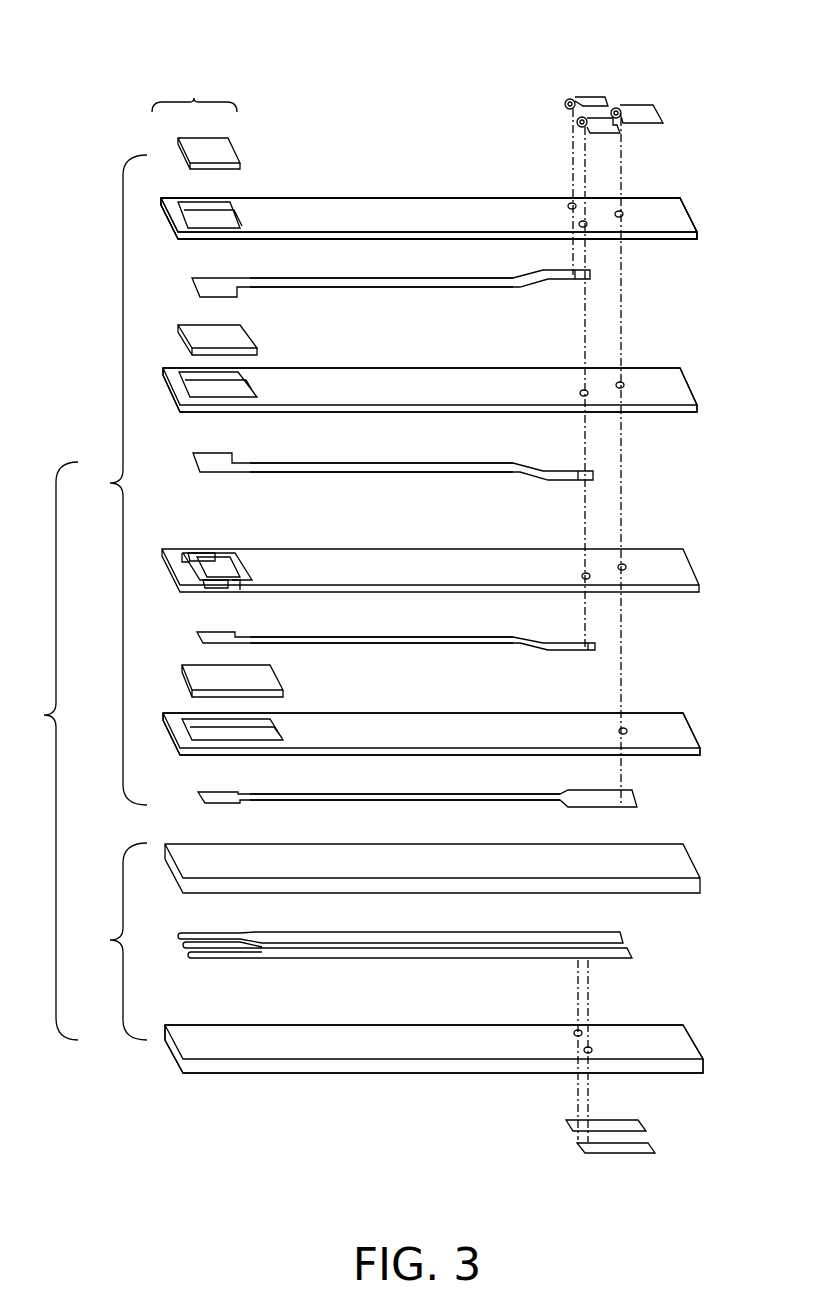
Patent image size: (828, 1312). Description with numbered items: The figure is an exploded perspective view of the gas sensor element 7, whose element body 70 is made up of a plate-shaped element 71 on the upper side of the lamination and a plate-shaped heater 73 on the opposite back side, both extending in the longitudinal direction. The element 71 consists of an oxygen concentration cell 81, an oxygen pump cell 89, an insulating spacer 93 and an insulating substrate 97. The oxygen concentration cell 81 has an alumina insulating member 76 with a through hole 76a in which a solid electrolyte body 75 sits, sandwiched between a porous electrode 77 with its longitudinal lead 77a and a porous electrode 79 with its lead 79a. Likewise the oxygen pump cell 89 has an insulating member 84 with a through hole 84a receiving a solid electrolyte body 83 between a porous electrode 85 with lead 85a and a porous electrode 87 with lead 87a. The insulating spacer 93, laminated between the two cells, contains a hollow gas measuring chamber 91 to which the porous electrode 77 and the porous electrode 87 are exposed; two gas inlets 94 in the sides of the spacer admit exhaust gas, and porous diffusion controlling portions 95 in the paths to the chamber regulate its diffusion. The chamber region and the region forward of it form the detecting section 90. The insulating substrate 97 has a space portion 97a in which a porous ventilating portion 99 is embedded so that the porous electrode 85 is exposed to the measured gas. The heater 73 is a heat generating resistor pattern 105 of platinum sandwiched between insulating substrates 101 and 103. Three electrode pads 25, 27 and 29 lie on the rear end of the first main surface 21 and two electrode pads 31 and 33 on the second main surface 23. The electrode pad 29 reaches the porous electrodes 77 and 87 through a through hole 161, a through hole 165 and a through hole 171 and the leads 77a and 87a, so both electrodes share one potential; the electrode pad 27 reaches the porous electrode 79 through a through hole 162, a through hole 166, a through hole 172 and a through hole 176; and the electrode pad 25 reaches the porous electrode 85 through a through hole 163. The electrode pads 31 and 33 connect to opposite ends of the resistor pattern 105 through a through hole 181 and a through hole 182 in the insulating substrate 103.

The gas sensor element 7 is at (423, 73).
The first main surface 21 is at (350, 205).
The second main surface 23 is at (350, 1076).
The electrode pad 25 is at (592, 95).
The electrode pad 27 is at (645, 106).
The electrode pad 29 is at (602, 132).
The electrode pad 31 is at (620, 1122).
The electrode pad 33 is at (632, 1150).
The element body 70 is at (46, 751).
The element 71 is at (115, 480).
The heater 73 is at (113, 941).
The solid electrolyte body 75 is at (270, 683).
The insulating member 76 is at (355, 720).
The through hole 76a is at (262, 732).
The porous electrode 77 is at (215, 637).
The lead 77a is at (410, 638).
The porous electrode 79 is at (225, 795).
The lead 79a is at (418, 797).
The oxygen concentration cell 81 is at (722, 719).
The solid electrolyte body 83 is at (225, 337).
The insulating member 84 is at (375, 378).
The through hole 84a is at (243, 388).
The porous electrode 85 is at (215, 292).
The lead 85a is at (360, 290).
The porous electrode 87 is at (215, 458).
The lead 87a is at (410, 468).
The oxygen pump cell 89 is at (722, 365).
The detecting section 90 is at (194, 92).
The gas measuring chamber 91 is at (225, 565).
The insulating spacer 93 is at (410, 556).
The gas inlet 94 is at (184, 556).
The diffusion controlling portion 95 is at (208, 556).
The insulating substrate 97 is at (428, 205).
The space portion 97a is at (240, 212).
The ventilating portion 99 is at (226, 153).
The insulating substrate 101 is at (340, 848).
The insulating substrate 103 is at (355, 1030).
The heat generating resistor pattern 105 is at (212, 960).
The through hole 161 is at (586, 221).
The through hole 162 is at (622, 212).
The through hole 163 is at (572, 203).
The through hole 165 is at (584, 390).
The through hole 166 is at (621, 382).
The through hole 171 is at (586, 573).
The through hole 172 is at (622, 570).
The through hole 176 is at (625, 728).
The through hole 181 is at (579, 1030).
The through hole 182 is at (591, 1047).